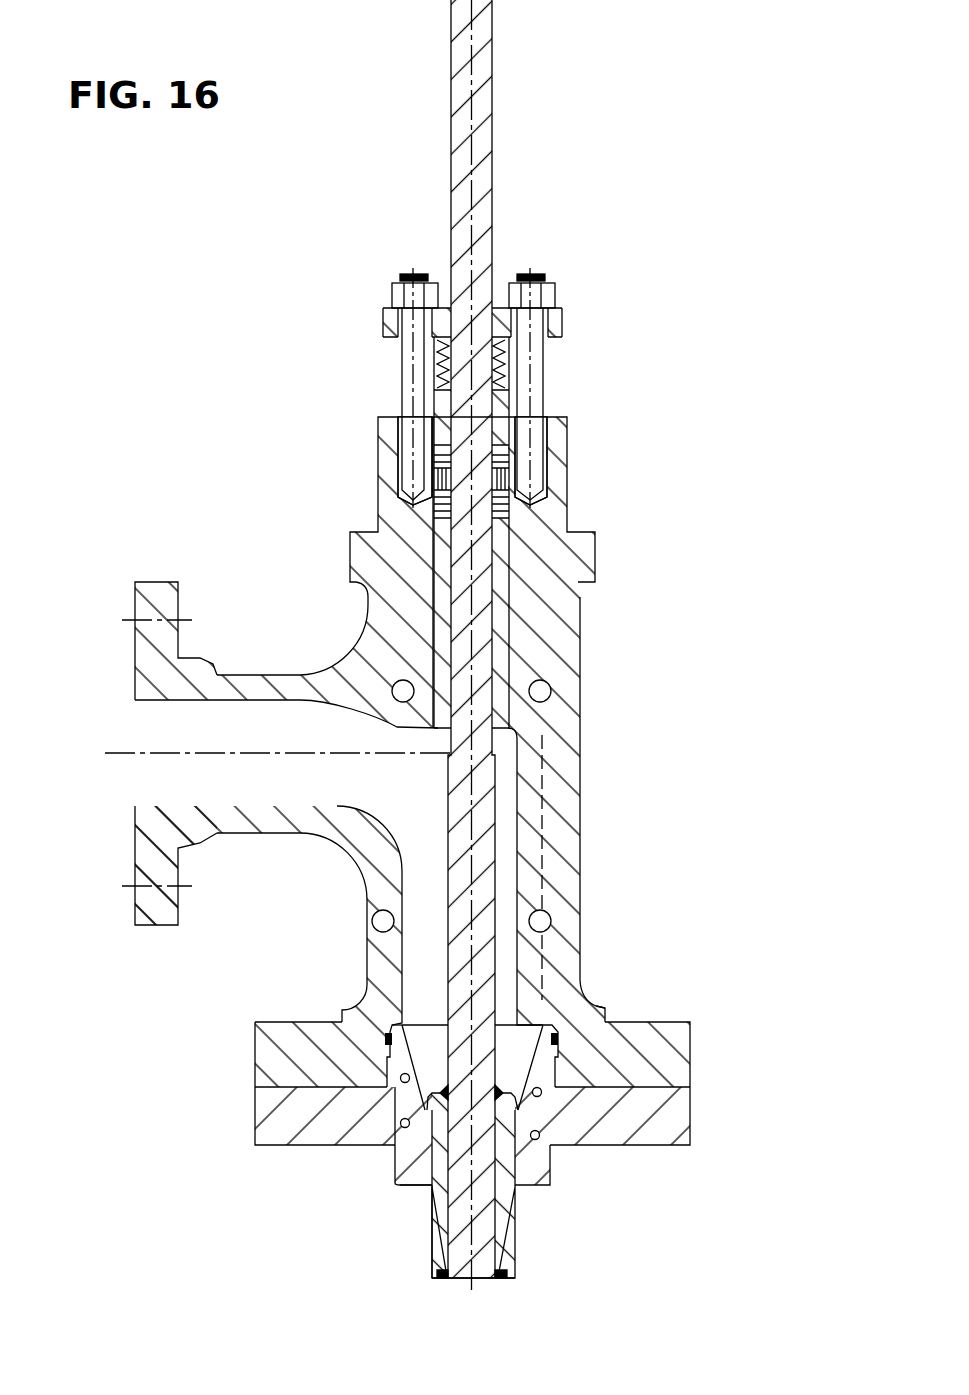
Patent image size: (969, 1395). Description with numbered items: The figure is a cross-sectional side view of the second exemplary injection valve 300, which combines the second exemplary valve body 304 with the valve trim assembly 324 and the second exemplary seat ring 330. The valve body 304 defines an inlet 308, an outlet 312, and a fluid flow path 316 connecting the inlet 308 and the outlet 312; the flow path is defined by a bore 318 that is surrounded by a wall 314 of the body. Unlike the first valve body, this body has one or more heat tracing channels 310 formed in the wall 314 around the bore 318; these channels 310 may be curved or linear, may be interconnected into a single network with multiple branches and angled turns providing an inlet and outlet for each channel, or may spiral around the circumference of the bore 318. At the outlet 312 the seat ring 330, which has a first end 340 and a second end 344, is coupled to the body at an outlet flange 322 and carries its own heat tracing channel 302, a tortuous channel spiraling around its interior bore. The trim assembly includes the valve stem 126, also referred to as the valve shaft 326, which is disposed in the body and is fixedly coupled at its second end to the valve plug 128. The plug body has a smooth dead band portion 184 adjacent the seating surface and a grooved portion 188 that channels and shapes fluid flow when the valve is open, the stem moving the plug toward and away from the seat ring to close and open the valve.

The valve stem 126 is at (483, 413).
The valve plug 128 is at (443, 1200).
The dead band portion 184 is at (403, 1185).
The grooved portion 188 is at (516, 1273).
The second exemplary injection valve 300 is at (698, 437).
The heat tracing channel 302 is at (400, 1078).
The second exemplary valve body 304 is at (565, 782).
The inlet 308 is at (138, 718).
The heat tracing channels 310 is at (398, 682).
The outlet 312 is at (394, 1262).
The wall 314 is at (565, 742).
The fluid flow path 316 is at (263, 727).
The bore 318 is at (222, 792).
The outlet flange 322 is at (680, 1043).
The valve trim assembly 324 is at (598, 1002).
The valve shaft 326 is at (400, 1065).
The second exemplary seat ring 330 is at (410, 1160).
The first end 340 is at (530, 1020).
The second end 344 is at (527, 1180).